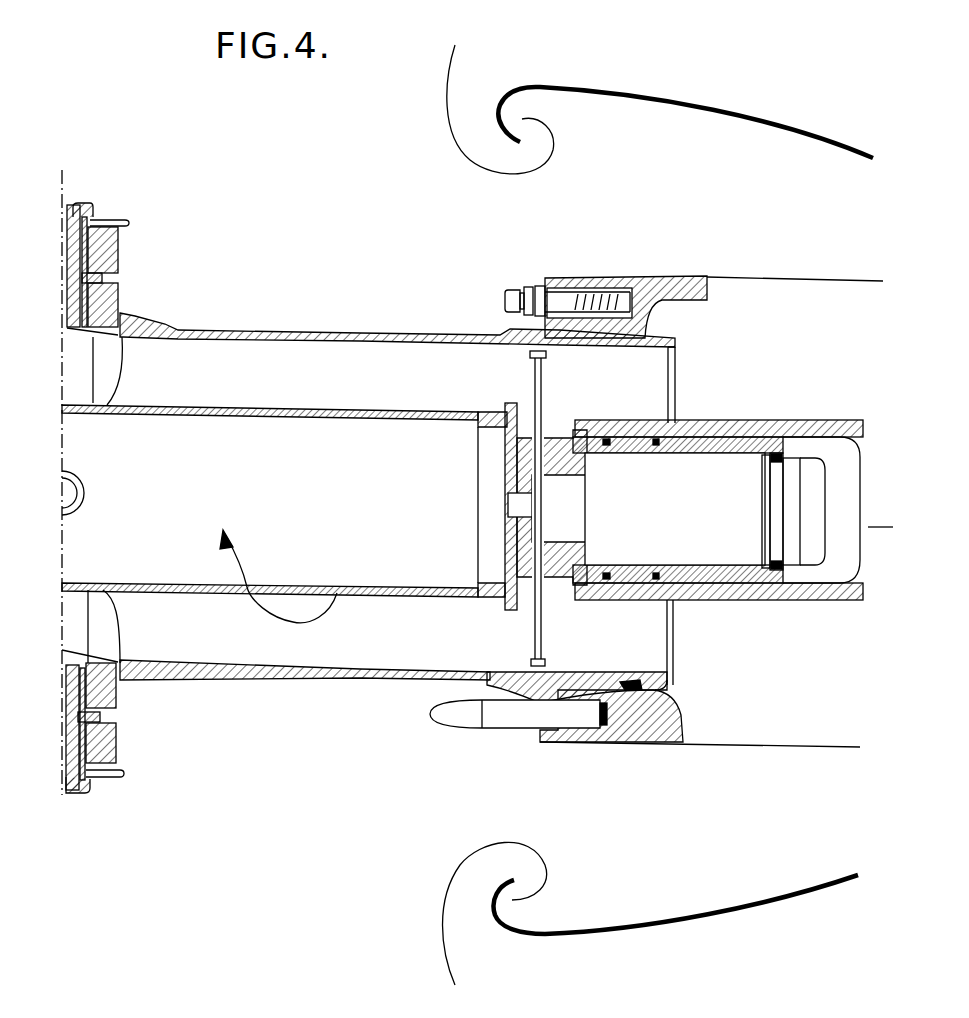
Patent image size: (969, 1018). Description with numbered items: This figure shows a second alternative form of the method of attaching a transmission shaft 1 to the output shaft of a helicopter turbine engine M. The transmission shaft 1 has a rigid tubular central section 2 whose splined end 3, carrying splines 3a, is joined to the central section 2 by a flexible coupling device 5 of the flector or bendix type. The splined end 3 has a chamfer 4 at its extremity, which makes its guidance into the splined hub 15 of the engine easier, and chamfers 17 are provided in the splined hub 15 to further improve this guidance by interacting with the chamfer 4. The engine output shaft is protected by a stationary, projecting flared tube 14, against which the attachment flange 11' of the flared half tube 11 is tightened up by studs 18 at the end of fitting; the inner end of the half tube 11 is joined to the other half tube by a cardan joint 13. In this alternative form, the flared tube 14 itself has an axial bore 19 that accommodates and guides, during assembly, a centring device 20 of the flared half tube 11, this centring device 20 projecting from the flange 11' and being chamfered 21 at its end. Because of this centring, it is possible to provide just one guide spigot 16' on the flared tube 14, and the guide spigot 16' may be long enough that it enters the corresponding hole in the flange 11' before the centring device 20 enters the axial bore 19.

The transmission shaft 1 is at (387, 602).
The rigid tubular central section 2 is at (432, 411).
The splined end 3 is at (695, 520).
The splines 3a is at (750, 584).
The chamfer 4 is at (806, 583).
The flexible coupling device 5 is at (545, 392).
The flared half tube 11 is at (397, 481).
The attachment flange 11' is at (706, 281).
The cardan joint 13 is at (128, 277).
The flared tube 14 is at (676, 745).
The splined hub 15 is at (752, 431).
The guide spigot 16' is at (518, 741).
The chamfers 17 is at (686, 436).
The studs 18 is at (527, 300).
The axial bore 19 is at (643, 688).
The centring device 20 is at (594, 680).
The chamfer 21 is at (672, 689).
The turbine engine M is at (880, 514).